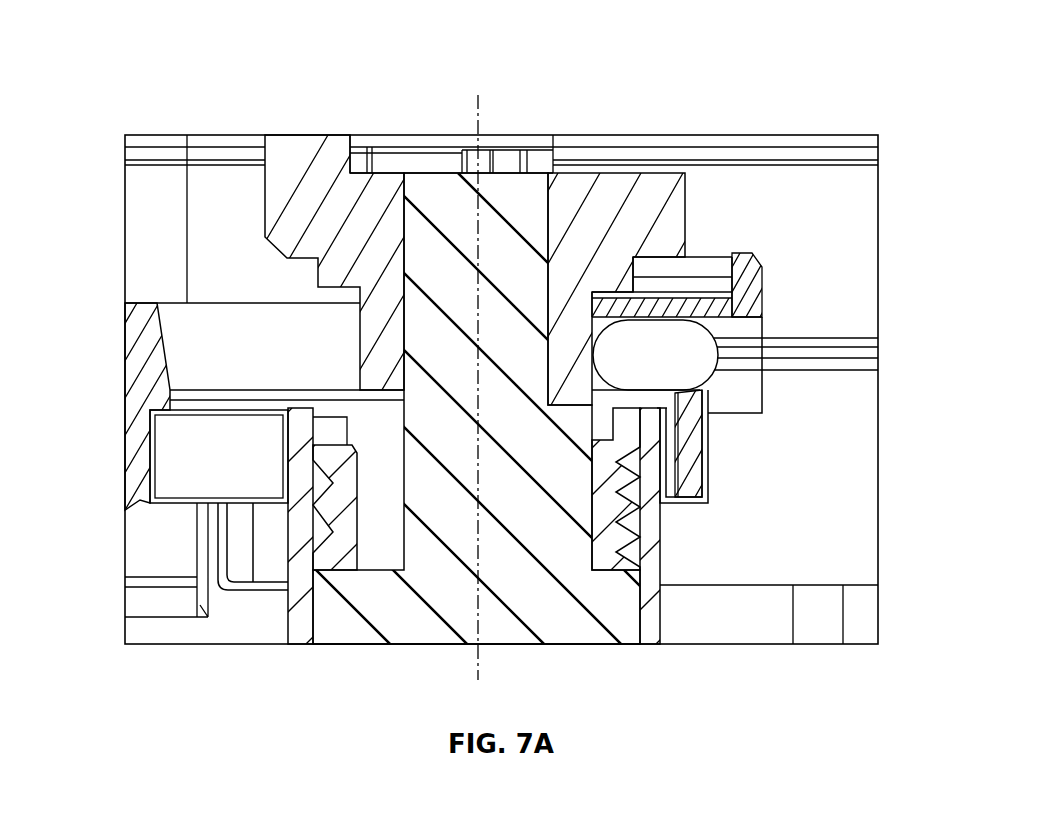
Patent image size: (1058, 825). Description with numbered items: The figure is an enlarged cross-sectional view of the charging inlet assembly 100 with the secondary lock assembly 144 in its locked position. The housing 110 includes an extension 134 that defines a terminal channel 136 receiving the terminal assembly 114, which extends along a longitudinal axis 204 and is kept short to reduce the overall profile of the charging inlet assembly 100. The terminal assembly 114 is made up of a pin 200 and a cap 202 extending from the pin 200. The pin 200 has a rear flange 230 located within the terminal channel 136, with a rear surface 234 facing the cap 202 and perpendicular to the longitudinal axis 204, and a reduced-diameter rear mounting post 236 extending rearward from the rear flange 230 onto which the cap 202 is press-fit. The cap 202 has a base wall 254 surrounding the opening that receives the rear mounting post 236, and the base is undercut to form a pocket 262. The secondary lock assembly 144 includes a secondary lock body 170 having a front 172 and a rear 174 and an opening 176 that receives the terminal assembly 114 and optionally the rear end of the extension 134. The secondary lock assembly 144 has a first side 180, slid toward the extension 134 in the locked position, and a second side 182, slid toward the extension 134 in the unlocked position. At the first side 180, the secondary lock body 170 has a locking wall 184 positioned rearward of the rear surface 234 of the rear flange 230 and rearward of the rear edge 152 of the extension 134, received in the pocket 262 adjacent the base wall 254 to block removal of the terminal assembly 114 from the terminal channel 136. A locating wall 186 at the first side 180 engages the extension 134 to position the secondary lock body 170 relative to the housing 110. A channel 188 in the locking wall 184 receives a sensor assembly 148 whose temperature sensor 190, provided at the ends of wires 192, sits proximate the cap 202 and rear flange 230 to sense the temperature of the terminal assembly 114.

The charging inlet assembly 100 is at (805, 91).
The housing 110 is at (653, 597).
The terminal assembly 114 is at (560, 613).
The extension 134 is at (300, 612).
The terminal channel 136 is at (340, 396).
The secondary lock assembly 144 is at (779, 287).
The sensor assembly 148 is at (716, 382).
The rear edge 152 is at (298, 403).
The secondary lock body 170 is at (693, 305).
The front 172 is at (150, 512).
The rear 174 is at (160, 303).
The opening 176 is at (228, 472).
The first side 180 is at (692, 470).
The second side 182 is at (160, 455).
The locking wall 184 is at (694, 403).
The locating wall 186 is at (692, 457).
The channel 188 is at (722, 325).
The temperature sensor 190 is at (688, 278).
The wires 192 is at (790, 340).
The pin 200 is at (530, 500).
The cap 202 is at (606, 190).
The longitudinal axis 204 is at (477, 122).
The rear flange 230 is at (320, 423).
The rear surface 234 is at (309, 406).
The rear mounting post 236 is at (448, 200).
The base wall 254 is at (560, 347).
The pocket 262 is at (598, 296).